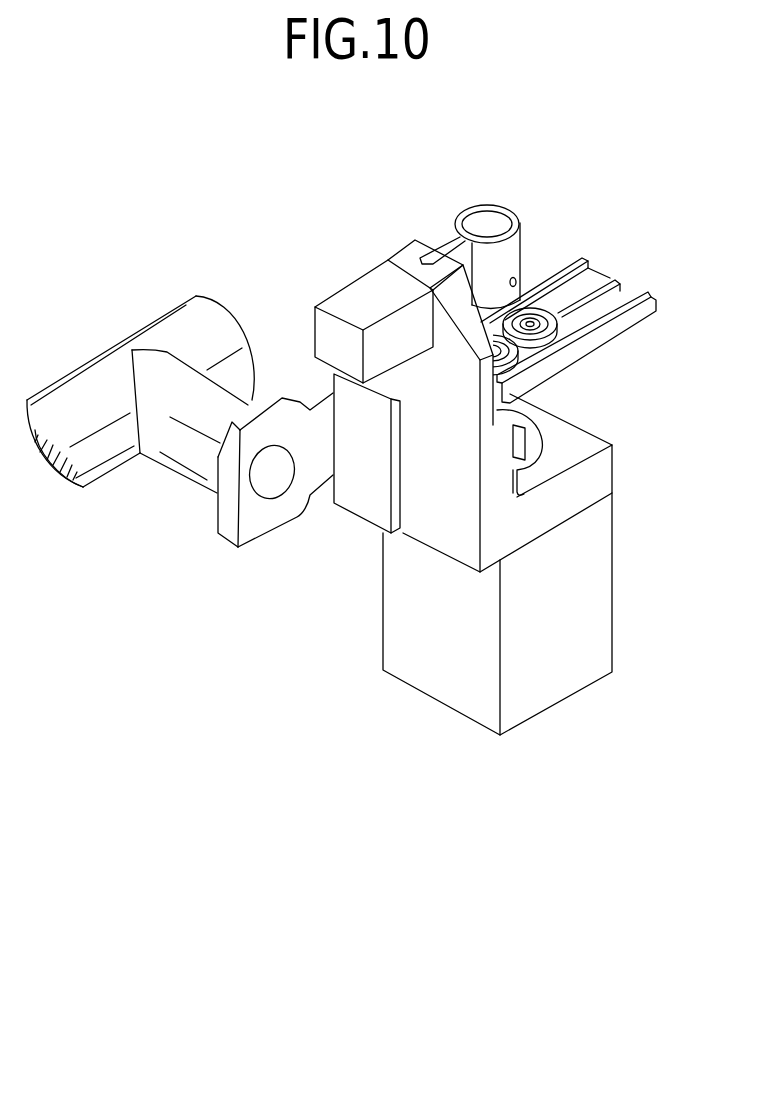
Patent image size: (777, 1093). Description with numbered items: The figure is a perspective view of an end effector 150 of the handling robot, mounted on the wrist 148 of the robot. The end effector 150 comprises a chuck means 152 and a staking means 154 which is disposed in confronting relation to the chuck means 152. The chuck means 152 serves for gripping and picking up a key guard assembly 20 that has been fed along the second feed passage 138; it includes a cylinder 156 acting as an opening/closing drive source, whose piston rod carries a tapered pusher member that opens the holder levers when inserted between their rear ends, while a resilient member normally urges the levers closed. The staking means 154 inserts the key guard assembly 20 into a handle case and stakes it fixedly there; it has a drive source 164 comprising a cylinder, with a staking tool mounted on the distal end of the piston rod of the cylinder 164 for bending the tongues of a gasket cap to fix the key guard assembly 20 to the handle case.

The wrist 148 is at (192, 310).
The cylinder 156 is at (347, 290).
The chuck means 152 is at (474, 200).
The key guard assembly 20 is at (537, 311).
The second feed passage 138 is at (637, 317).
The staking means 154 is at (626, 507).
The drive source 164 is at (614, 622).
The end effector 150 is at (635, 187).